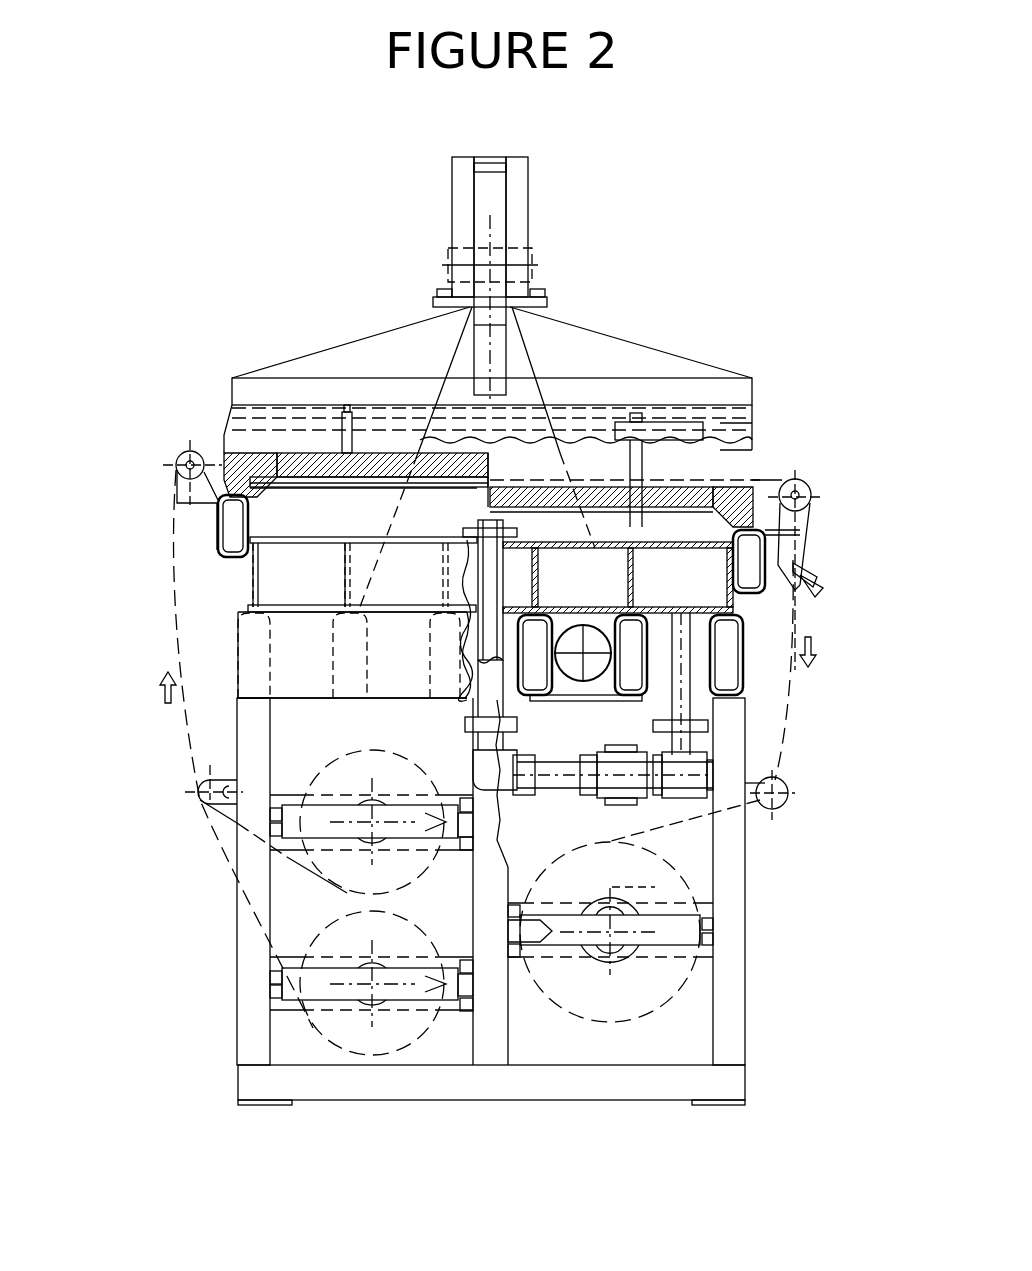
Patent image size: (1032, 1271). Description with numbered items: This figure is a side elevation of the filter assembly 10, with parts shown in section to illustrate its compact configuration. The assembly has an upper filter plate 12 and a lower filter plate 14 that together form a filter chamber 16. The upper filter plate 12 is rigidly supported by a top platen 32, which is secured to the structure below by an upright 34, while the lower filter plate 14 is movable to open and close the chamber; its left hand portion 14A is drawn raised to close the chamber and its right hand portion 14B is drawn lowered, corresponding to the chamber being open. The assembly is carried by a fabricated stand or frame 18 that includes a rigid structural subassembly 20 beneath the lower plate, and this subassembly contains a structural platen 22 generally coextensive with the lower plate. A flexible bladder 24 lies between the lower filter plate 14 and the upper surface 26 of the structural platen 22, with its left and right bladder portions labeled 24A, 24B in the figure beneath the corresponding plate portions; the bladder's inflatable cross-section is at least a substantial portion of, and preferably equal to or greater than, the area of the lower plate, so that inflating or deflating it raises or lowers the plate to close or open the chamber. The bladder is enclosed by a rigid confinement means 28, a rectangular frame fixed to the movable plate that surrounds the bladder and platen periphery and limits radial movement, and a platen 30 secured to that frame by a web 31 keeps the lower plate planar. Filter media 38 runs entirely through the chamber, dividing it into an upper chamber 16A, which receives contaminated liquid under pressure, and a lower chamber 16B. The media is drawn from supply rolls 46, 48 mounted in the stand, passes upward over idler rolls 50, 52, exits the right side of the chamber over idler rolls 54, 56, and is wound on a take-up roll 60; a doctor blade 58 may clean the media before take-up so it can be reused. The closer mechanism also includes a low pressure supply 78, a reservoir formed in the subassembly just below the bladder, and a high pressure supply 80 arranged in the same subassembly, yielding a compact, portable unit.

The filter assembly 10 is at (876, 232).
The upper filter plate 12 is at (748, 417).
The lower filter plate 14 is at (266, 410).
The left hand portion of the lower filter plate 14A is at (323, 438).
The right hand portion of the lower filter plate 14B is at (678, 483).
The filter chamber 16 is at (250, 450).
The upper chamber 16A is at (383, 428).
The lower chamber 16B is at (358, 432).
The fabricated stand or frame 18 is at (235, 940).
The rigid structural subassembly 20 is at (237, 680).
The structural platen 22 is at (363, 548).
The flexible bladder 24 is at (243, 517).
The screen frame left section 24A is at (370, 535).
The screen frame right section 24B is at (618, 577).
The upper surface of the structural platen 26 is at (252, 568).
The rigid confinement means 28 is at (762, 603).
The platen 30 is at (218, 555).
The web 31 is at (180, 486).
The top platen 32 is at (400, 322).
The upright 34 is at (532, 350).
The filter media 38 is at (770, 466).
The supply roll 46 is at (371, 822).
The supply roll 48 is at (371, 983).
The idler roll 50 is at (195, 798).
The idler roll 52 is at (165, 456).
The idler roll 54 is at (814, 485).
The idler roll 56 is at (795, 805).
The doctor blade 58 is at (821, 583).
The take-up roll 60 is at (610, 932).
The low pressure supply 78 is at (252, 566).
The high pressure supply 80 is at (562, 688).